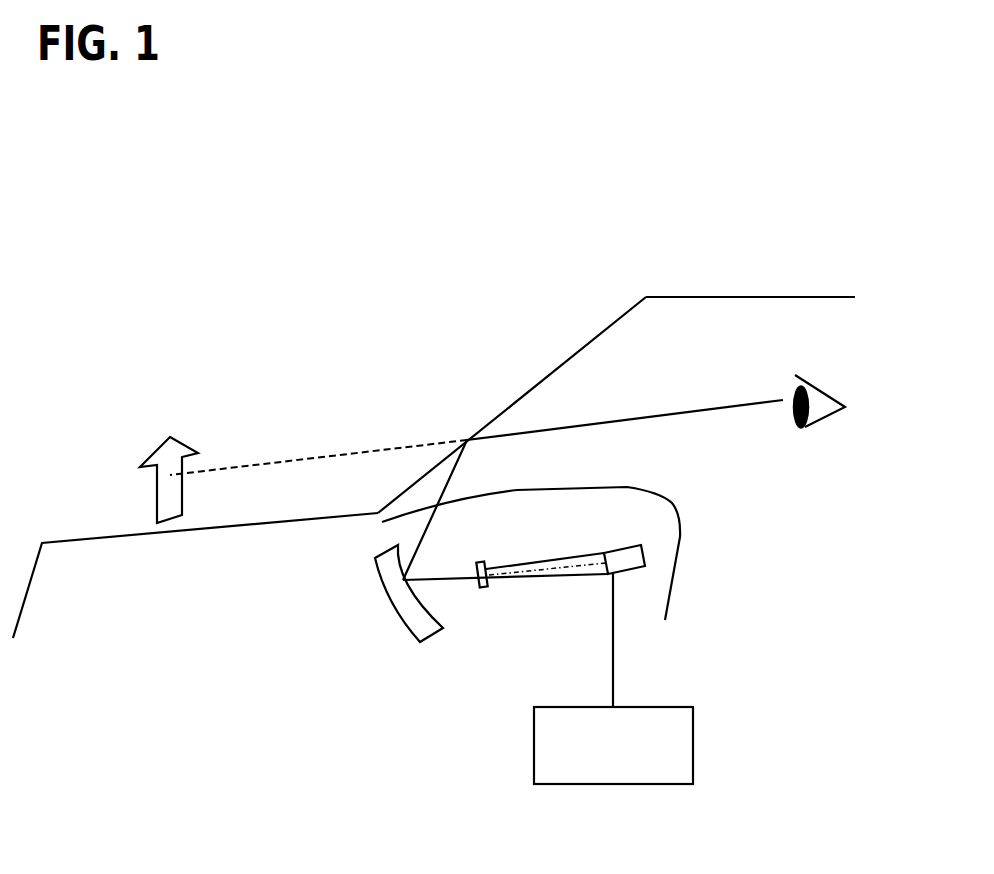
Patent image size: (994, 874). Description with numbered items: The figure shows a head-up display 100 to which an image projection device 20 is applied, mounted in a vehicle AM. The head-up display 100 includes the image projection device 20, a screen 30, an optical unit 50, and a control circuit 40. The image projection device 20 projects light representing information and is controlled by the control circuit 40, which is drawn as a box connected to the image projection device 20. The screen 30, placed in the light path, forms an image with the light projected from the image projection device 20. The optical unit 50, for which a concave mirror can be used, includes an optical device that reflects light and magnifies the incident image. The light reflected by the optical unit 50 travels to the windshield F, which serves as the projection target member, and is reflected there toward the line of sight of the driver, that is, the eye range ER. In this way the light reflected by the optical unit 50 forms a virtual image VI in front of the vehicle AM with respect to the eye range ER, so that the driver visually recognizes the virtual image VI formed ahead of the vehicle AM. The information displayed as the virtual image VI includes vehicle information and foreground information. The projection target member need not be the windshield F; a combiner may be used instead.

The image projection device 20 is at (613, 551).
The screen 30 is at (485, 565).
The control circuit 40 is at (693, 747).
The optical unit 50 is at (390, 588).
The head-up display 100 is at (393, 650).
The windshield F is at (583, 347).
The vehicle AM is at (767, 296).
The eye range ER is at (827, 388).
The virtual image VI is at (142, 443).